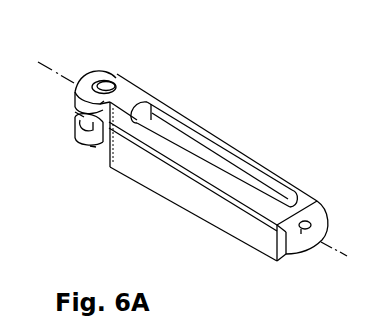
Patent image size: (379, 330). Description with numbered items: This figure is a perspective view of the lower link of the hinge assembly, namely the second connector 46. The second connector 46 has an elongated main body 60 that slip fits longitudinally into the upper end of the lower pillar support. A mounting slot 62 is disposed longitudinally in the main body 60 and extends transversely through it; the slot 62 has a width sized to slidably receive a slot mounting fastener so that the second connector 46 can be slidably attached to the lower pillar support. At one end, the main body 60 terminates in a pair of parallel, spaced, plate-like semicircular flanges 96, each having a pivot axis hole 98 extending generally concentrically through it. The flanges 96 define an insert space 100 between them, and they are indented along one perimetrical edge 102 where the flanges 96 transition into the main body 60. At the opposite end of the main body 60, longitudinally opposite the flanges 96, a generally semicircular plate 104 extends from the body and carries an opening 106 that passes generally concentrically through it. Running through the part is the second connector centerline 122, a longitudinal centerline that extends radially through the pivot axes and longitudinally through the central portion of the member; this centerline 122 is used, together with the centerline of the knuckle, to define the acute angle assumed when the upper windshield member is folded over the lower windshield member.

The second connector 46 is at (219, 117).
The main body 60 is at (210, 208).
The mounting slot 62 is at (262, 183).
The semicircular flanges 96 is at (90, 82).
The pivot axis hole 98 is at (107, 82).
The insert space 100 is at (83, 122).
The perimetrical edge 102 is at (100, 104).
The semicircular plate 104 is at (317, 218).
The opening 106 is at (305, 230).
The second connector centerline 122 is at (340, 253).